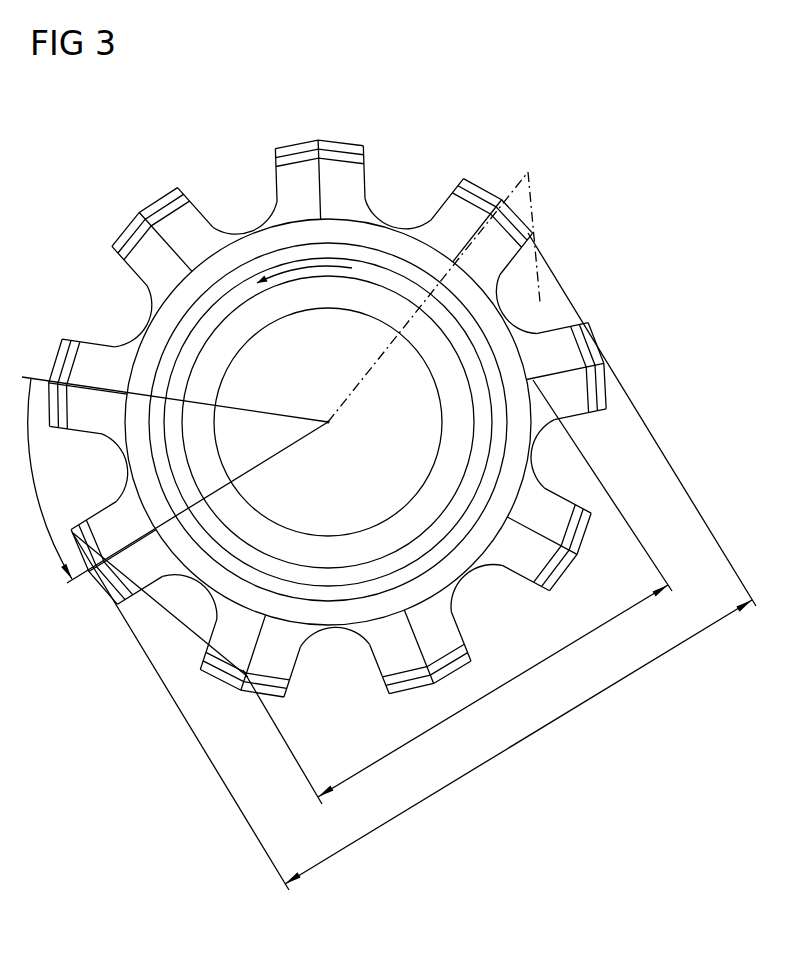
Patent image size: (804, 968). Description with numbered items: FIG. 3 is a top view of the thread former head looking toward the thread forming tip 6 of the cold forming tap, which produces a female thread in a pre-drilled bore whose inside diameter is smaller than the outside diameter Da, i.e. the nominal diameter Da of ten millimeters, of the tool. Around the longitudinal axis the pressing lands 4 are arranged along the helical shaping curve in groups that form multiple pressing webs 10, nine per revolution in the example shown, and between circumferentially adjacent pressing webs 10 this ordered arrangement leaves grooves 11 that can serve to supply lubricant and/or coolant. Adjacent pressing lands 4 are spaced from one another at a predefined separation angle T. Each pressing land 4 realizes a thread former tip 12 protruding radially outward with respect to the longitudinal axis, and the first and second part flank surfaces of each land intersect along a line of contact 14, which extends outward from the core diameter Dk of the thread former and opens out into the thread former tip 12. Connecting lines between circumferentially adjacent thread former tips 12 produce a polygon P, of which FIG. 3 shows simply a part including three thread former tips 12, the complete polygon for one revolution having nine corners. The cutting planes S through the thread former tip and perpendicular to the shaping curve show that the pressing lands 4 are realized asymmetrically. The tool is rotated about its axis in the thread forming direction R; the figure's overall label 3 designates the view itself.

The sprocket 3 is at (501, 160).
The pressing land 4 is at (603, 392).
The thread forming tip 6 is at (333, 426).
The pressing web 10 is at (321, 123).
The groove 11 is at (243, 200).
The thread former tip 12 is at (575, 560).
The line of contact 14 is at (323, 178).
The thread forming direction R is at (306, 270).
The cutting plane S is at (531, 205).
The separation angle T is at (36, 475).
The polygon P is at (176, 624).
The core diameter Dk is at (495, 690).
The outside diameter Da is at (518, 742).